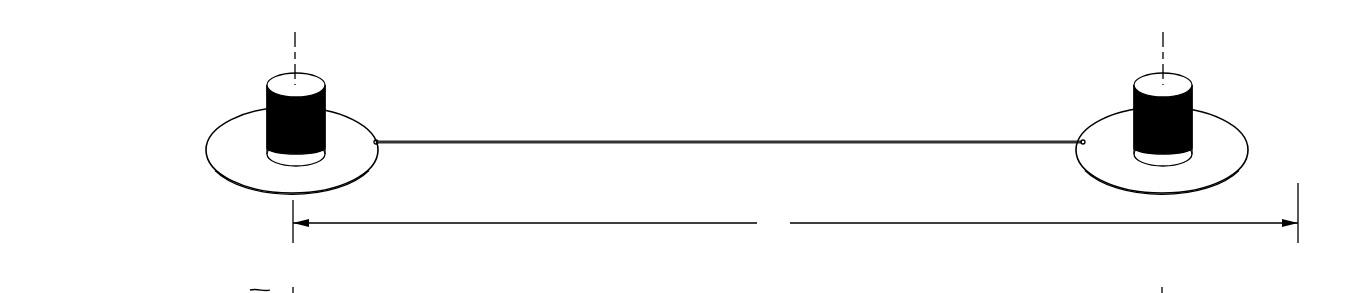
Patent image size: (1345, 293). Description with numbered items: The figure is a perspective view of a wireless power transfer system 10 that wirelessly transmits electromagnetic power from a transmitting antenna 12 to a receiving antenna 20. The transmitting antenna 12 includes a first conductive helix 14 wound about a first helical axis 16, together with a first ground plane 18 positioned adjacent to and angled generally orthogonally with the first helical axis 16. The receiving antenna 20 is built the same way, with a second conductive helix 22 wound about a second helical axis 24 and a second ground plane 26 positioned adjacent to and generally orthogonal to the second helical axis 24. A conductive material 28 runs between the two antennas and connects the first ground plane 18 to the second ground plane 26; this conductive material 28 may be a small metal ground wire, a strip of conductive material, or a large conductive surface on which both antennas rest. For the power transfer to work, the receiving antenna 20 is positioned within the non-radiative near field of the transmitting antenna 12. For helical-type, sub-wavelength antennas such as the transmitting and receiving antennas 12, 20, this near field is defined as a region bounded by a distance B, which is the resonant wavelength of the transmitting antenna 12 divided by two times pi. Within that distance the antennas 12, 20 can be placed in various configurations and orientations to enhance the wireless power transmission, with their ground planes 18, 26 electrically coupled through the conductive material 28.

The wireless power transfer system 10 is at (499, 82).
The transmitting antenna 12 is at (221, 94).
The first conductive helix 14 is at (323, 102).
The first helical axis 16 is at (294, 45).
The first ground plane 18 is at (242, 167).
The receiving antenna 20 is at (1237, 100).
The second conductive helix 22 is at (1135, 100).
The second helical axis 24 is at (1165, 45).
The second ground plane 26 is at (1228, 152).
The conductive material 28 is at (778, 142).